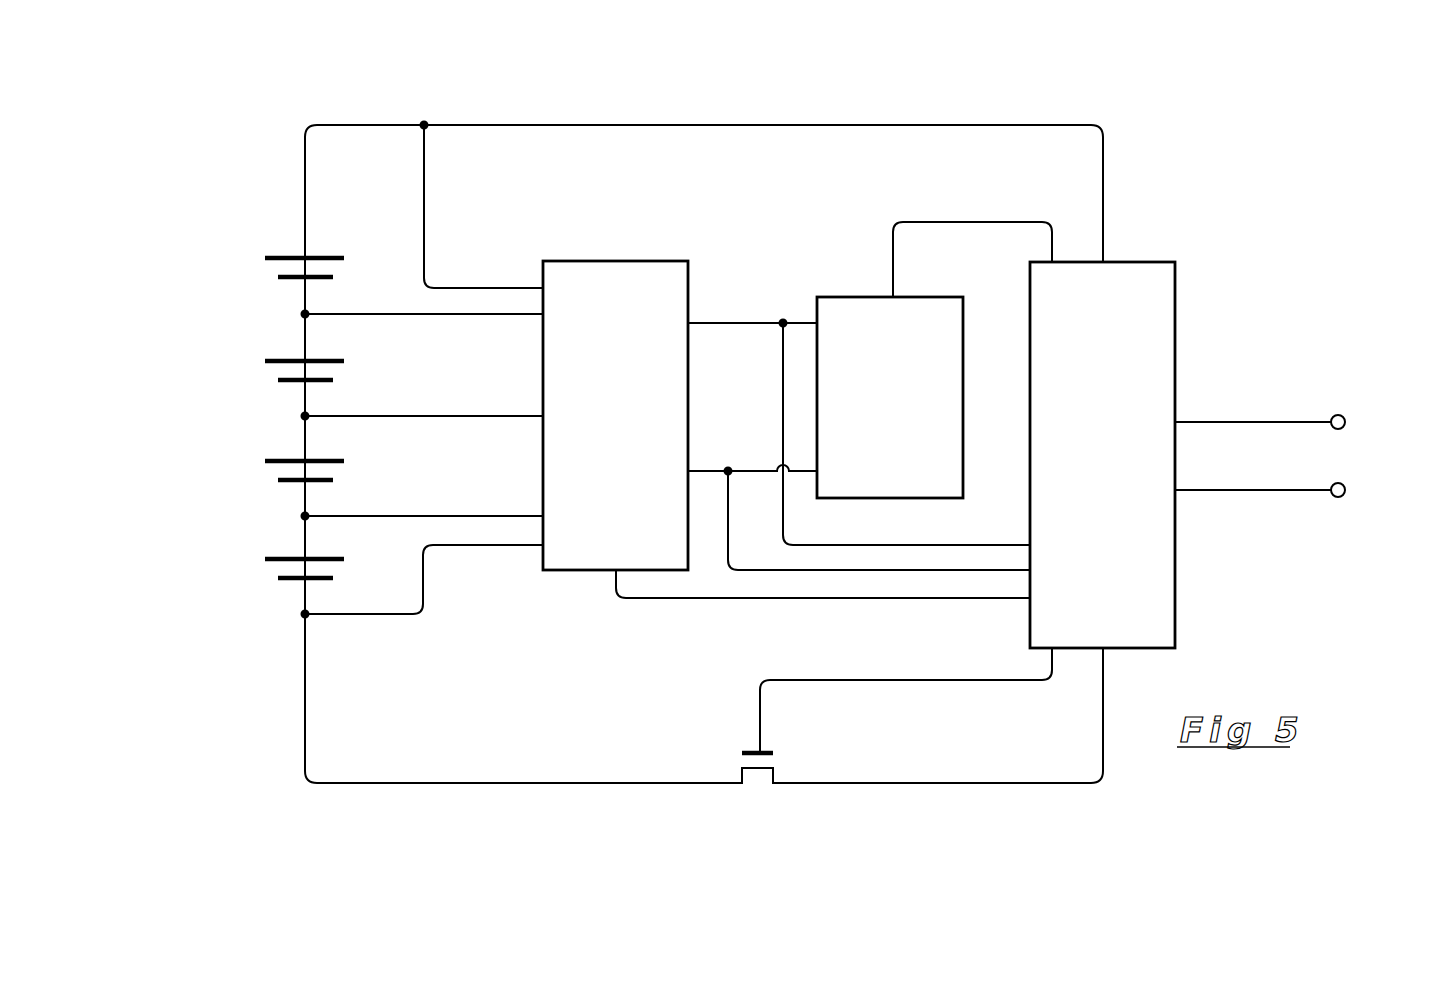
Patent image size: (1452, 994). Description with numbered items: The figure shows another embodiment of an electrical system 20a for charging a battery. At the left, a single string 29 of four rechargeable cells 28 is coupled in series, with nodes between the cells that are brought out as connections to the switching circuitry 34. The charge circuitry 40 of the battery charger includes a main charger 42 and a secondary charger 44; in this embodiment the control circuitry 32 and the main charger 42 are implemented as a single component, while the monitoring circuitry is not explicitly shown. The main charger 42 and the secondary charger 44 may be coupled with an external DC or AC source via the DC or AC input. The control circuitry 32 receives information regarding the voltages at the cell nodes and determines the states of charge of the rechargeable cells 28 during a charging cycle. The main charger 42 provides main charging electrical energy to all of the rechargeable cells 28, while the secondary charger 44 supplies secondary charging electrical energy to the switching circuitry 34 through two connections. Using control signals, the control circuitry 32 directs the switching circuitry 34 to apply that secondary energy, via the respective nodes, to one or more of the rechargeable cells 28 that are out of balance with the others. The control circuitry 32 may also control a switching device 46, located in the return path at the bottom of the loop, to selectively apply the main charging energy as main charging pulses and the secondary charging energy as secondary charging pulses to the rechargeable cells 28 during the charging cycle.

The electrical system 20a is at (274, 116).
The rechargeable cells 28 is at (260, 277).
The string 29 is at (281, 232).
The switching circuitry 34 is at (615, 260).
The charge circuitry 40 is at (936, 272).
The secondary charger 44 is at (848, 296).
The control circuitry 32 is at (1220, 445).
The main charger 42 is at (1177, 313).
The switching device 46 is at (790, 758).